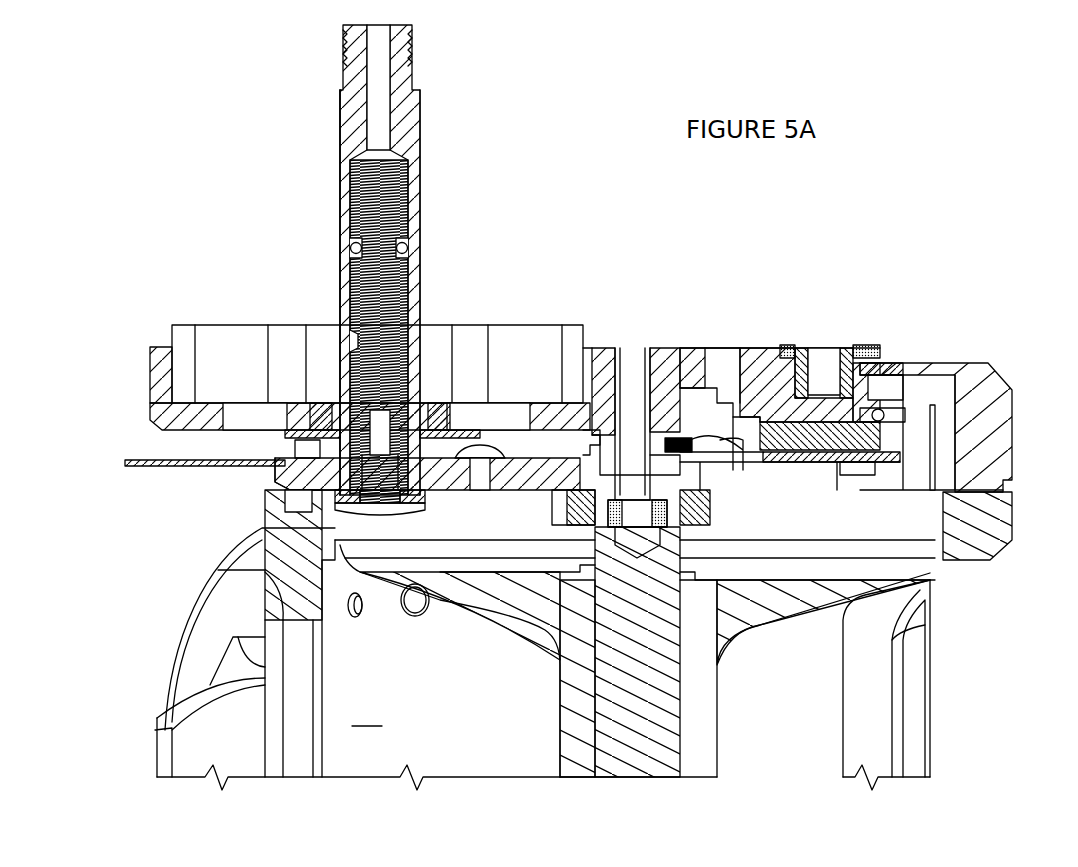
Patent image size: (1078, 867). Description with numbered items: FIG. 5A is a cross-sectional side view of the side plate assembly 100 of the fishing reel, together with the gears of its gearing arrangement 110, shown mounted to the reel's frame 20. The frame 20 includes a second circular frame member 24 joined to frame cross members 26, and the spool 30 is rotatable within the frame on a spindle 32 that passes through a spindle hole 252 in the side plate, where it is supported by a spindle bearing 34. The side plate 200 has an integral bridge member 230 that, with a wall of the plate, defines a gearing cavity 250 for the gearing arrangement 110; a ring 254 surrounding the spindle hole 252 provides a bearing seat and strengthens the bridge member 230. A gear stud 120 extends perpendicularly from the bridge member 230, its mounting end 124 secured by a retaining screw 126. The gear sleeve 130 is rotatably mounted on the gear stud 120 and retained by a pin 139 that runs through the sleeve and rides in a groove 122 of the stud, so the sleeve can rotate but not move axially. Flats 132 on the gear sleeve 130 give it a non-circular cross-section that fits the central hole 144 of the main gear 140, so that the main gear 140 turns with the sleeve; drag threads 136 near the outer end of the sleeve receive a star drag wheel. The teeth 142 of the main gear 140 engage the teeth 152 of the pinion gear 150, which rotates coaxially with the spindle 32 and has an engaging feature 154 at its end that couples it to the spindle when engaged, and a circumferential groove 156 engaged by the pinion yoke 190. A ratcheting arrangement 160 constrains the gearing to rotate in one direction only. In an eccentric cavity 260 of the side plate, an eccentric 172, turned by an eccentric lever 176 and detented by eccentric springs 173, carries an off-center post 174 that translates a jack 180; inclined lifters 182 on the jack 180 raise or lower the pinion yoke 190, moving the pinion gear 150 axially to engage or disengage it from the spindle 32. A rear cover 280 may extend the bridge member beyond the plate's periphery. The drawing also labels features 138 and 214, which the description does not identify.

The side plate assembly 100 is at (188, 136).
The gearing arrangement 110 is at (566, 288).
The gear stud 120 is at (415, 200).
The groove 122 is at (410, 250).
The mounting end 124 is at (410, 480).
The retaining screw 126 is at (370, 505).
The gear sleeve 130 is at (435, 122).
The flats 132 is at (340, 278).
The drag threads 136 is at (340, 118).
The bore 138 is at (418, 44).
The pin 139 is at (348, 247).
The main gear 140 is at (168, 325).
The teeth 142 is at (150, 370).
The central hole 144 is at (338, 345).
The pinion gear 150 is at (648, 462).
The teeth 152 is at (600, 345).
The engaging feature 154 is at (622, 468).
The circumferential groove 156 is at (583, 445).
The ratcheting arrangement 160 is at (282, 442).
The eccentric 172 is at (805, 345).
The eccentric springs 173 is at (890, 400).
The post 174 is at (860, 475).
The eccentric lever 176 is at (868, 345).
The jack 180 is at (790, 462).
The inclined lifters 182 is at (738, 452).
The pinion yoke 190 is at (680, 395).
The side plate 200 is at (1000, 372).
The housing top 214 is at (915, 360).
The bridge member 230 is at (270, 478).
The gearing cavity 250 is at (520, 440).
The spindle hole 252 is at (565, 490).
The ring 254 is at (715, 505).
The eccentric cavity 260 is at (915, 452).
The rear cover 280 is at (132, 468).
The frame 20 is at (375, 640).
The second circular frame member 24 is at (995, 562).
The frame cross members 26 is at (930, 675).
The spool 30 is at (745, 635).
The spindle 32 is at (680, 712).
The spindle bearing 34 is at (702, 512).